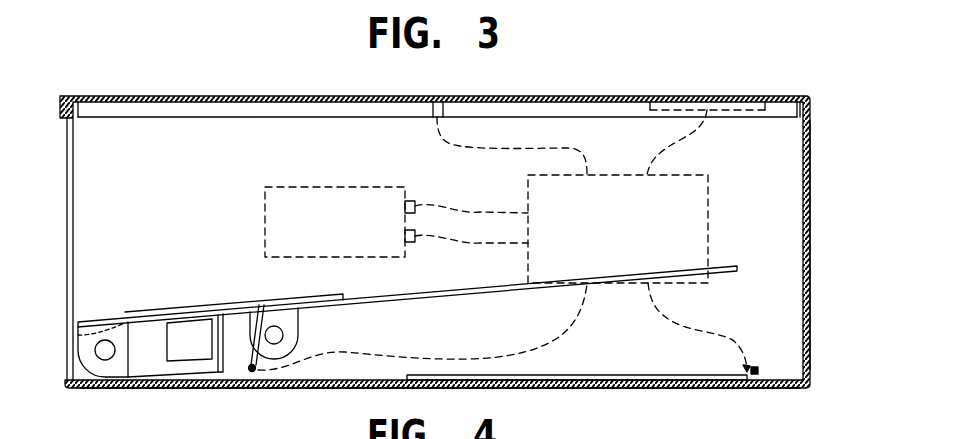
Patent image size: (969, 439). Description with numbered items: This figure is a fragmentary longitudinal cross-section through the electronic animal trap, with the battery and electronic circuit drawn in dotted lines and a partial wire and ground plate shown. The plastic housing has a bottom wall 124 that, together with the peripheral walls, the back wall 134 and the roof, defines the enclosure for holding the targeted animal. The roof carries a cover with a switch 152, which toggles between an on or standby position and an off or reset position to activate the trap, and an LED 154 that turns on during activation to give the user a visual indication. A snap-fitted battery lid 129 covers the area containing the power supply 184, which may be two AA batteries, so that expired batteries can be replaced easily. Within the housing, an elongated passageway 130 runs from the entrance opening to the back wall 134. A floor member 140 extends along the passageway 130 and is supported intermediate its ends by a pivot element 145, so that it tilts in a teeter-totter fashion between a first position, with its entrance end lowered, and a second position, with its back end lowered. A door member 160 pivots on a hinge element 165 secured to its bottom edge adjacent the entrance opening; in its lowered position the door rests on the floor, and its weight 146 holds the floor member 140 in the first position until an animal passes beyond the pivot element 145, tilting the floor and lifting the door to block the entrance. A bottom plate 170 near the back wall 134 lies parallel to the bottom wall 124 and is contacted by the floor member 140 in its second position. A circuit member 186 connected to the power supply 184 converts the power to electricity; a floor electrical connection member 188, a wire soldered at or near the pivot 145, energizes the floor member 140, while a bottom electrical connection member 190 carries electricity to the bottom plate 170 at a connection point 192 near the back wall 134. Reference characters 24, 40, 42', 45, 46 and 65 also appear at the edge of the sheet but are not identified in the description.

The housing 24 is at (777, 0).
The circuit board 40 is at (326, 0).
The connector 42' is at (167, 21).
The component 45 is at (270, 0).
The component 46 is at (215, 0).
The component 65 is at (133, 0).
The bottom wall 124 is at (580, 388).
The battery lid 129 is at (137, 96).
The passageway 130 is at (168, 190).
The back wall 134 is at (811, 290).
The floor member 140 is at (445, 290).
The pivot element 145 is at (278, 350).
The weight 146 is at (147, 340).
The switch 152 is at (655, 96).
The LED 154 is at (437, 96).
The door member 160 is at (228, 300).
The hinge element 165 is at (104, 361).
The bottom plate 170 is at (627, 375).
The power supply 184 is at (327, 202).
The circuit member 186 is at (712, 212).
The floor electrical connection member 188 is at (240, 372).
The bottom electrical connection member 190 is at (680, 325).
The connection point 192 is at (756, 368).